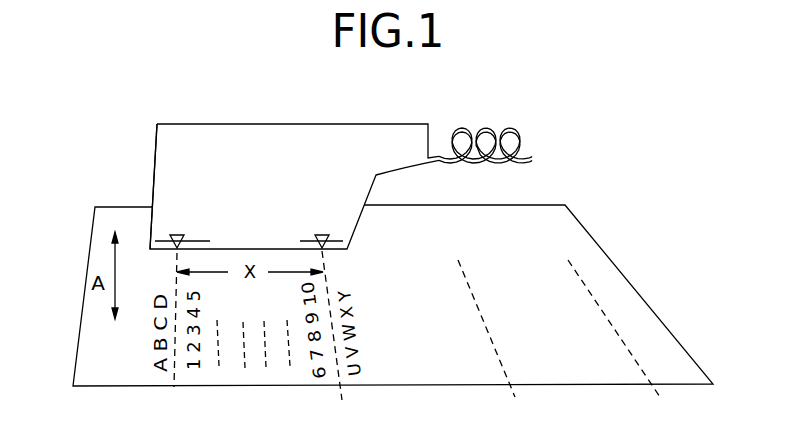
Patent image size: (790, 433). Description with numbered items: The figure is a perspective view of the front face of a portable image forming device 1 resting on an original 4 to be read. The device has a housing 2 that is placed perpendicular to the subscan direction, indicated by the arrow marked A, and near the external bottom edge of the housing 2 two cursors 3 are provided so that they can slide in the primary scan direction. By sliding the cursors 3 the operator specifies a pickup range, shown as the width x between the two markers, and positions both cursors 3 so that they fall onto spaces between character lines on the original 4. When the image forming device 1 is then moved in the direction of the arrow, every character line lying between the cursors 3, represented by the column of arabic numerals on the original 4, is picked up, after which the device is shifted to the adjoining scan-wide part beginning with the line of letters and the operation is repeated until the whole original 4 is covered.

The portable image forming device 1 is at (284, 116).
The housing 2 is at (157, 151).
The cursors 3 is at (176, 234).
The original 4 is at (610, 266).